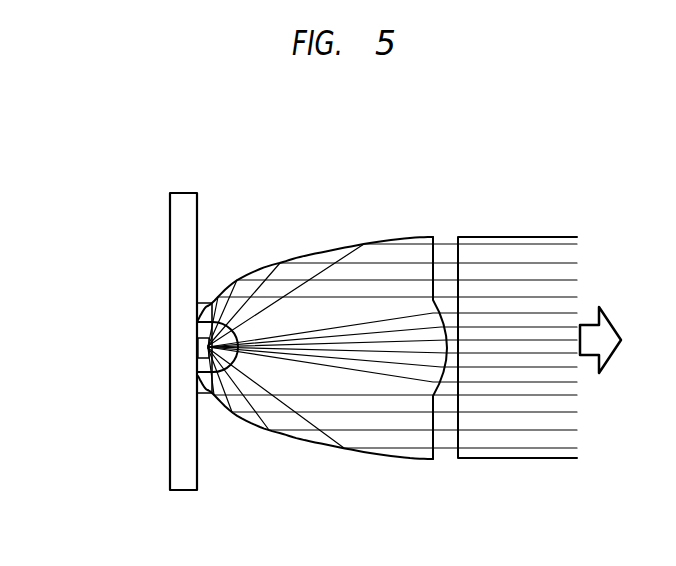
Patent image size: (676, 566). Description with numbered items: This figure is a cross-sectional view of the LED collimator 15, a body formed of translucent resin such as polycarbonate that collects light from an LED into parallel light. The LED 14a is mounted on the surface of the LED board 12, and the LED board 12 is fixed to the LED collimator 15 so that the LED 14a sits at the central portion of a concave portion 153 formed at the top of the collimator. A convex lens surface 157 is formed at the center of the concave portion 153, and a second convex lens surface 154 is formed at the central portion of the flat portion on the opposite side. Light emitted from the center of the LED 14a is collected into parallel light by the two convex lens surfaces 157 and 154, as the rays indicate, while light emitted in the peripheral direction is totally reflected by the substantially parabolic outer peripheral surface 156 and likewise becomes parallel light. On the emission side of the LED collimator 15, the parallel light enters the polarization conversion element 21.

The LED board 12 is at (183, 205).
The LED 14a is at (200, 347).
The LED collimator 15 is at (330, 328).
The concave portion 153 is at (203, 384).
The convex lens surface 154 is at (438, 333).
The outer peripheral surface 156 is at (320, 250).
The convex lens surface 157 is at (235, 330).
The polarization conversion element 21 is at (485, 442).